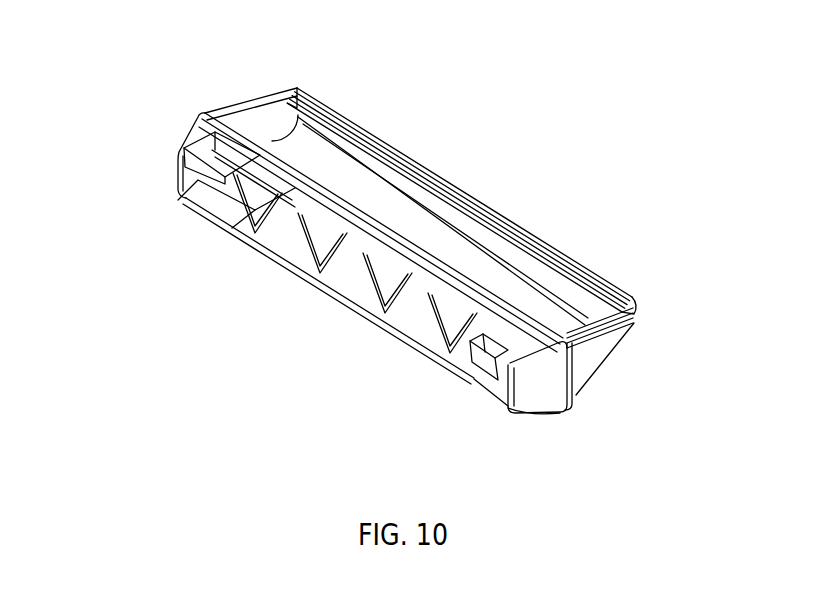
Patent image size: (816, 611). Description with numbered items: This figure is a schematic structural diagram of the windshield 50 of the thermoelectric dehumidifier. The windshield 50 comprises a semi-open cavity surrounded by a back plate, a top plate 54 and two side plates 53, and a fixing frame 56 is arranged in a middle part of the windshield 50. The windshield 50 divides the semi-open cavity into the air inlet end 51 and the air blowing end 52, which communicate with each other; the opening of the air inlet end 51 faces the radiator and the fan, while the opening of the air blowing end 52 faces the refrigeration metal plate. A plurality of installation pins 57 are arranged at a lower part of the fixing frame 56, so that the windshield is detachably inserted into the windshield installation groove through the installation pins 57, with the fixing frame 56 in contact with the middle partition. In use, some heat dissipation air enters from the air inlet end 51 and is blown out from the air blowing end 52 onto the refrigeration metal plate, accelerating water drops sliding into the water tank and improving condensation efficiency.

The windshield 50 is at (540, 160).
The air inlet end 51 is at (300, 241).
The air blowing end 52 is at (370, 182).
The side plates 53 is at (268, 133).
The top plate 54 is at (580, 300).
The fixing frame 56 is at (577, 413).
The installation pins 57 is at (212, 160).